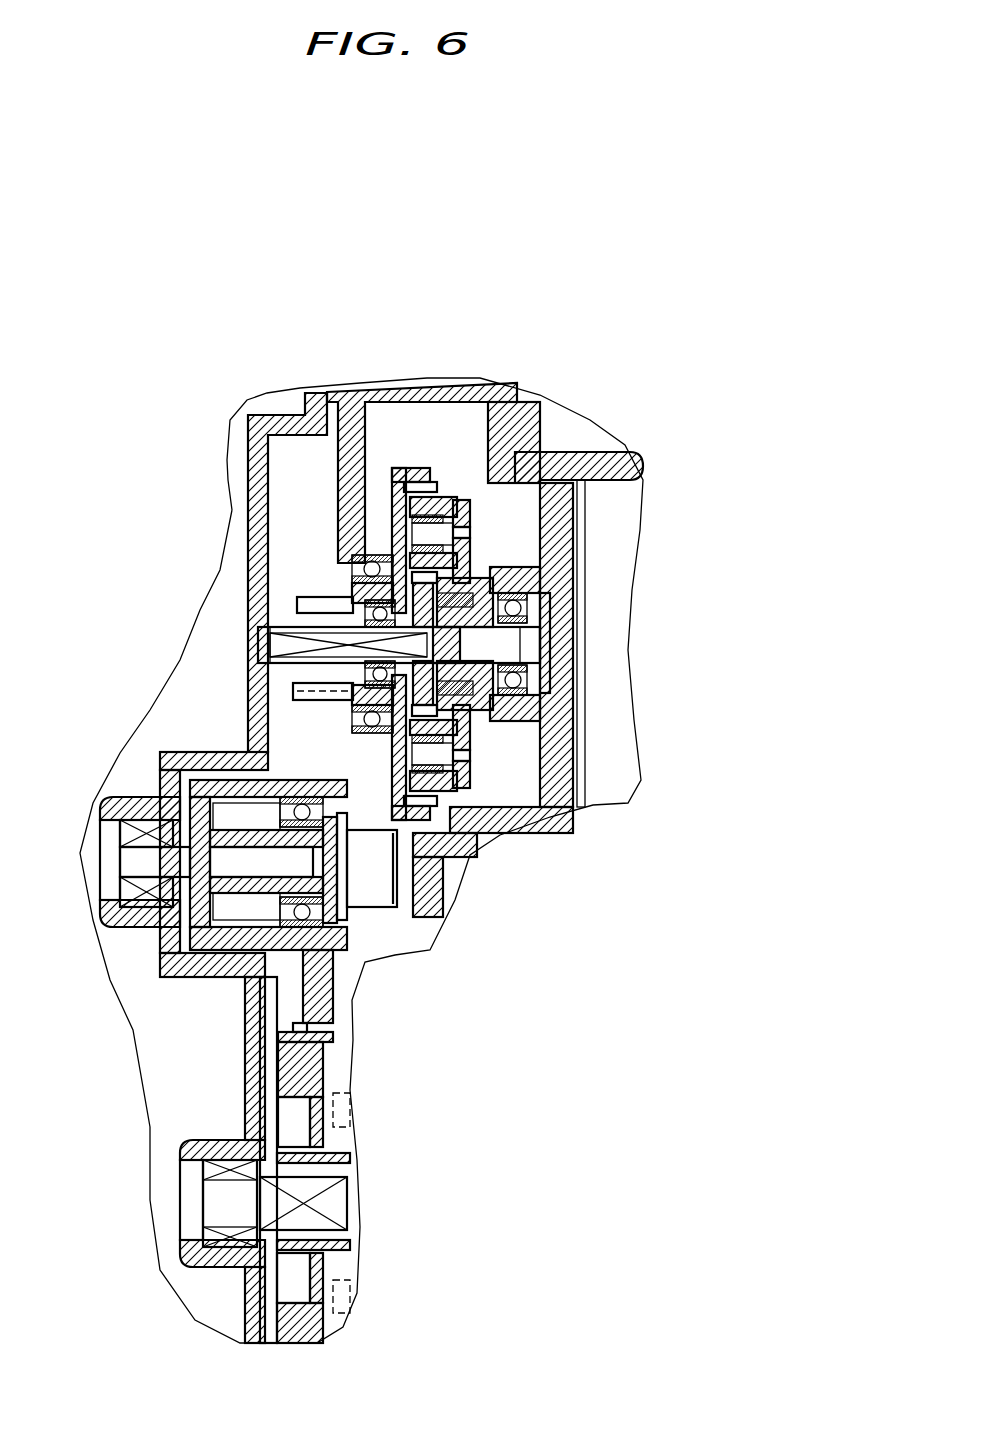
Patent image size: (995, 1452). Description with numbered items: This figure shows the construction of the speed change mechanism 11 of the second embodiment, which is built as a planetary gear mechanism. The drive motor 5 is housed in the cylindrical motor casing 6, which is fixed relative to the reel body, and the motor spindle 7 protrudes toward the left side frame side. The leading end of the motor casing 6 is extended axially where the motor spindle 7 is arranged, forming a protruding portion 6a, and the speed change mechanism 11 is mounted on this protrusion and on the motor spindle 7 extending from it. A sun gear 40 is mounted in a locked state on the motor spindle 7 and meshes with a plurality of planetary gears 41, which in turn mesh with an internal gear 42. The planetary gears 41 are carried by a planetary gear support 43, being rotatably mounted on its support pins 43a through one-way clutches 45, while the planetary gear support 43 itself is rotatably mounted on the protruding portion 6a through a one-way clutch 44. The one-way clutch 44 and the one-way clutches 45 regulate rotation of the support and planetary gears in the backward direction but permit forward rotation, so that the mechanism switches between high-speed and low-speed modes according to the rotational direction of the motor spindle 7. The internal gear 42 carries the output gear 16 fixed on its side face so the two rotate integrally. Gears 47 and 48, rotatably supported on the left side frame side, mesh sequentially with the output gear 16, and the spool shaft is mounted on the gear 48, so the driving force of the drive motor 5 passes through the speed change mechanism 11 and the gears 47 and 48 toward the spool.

The drive motor 5 is at (615, 533).
The motor casing 6 is at (588, 452).
The protruding portion of the motor casing 6a is at (542, 642).
The motor spindle 7 is at (527, 632).
The speed change mechanism 11 is at (496, 790).
The output gear 16 is at (320, 580).
The sun gear 40 is at (310, 688).
The planetary gears 41 is at (452, 490).
The internal gear 42 is at (415, 468).
The planetary gear support 43 is at (472, 515).
The support pins 43a is at (400, 538).
The one-way clutch 44 is at (478, 733).
The one-way clutches 45 is at (307, 410).
The gear 47 is at (307, 988).
The gear 48 is at (305, 1130).